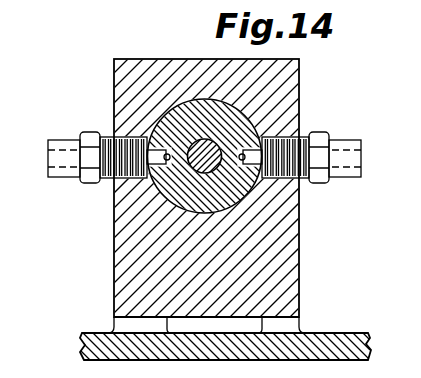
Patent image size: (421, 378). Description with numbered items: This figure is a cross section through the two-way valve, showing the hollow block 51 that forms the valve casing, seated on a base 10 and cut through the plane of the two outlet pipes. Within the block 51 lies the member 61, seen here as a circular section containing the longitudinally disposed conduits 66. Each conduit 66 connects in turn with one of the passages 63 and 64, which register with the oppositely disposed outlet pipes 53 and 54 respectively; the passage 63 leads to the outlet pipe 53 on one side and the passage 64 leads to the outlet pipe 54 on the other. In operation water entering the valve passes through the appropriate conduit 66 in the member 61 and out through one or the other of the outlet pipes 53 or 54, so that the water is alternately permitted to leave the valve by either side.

The base plate 10 is at (233, 209).
The hollow block 51 is at (299, 243).
The outlet pipe 53 is at (72, 147).
The outlet pipe 54 is at (335, 137).
The member 61 is at (183, 192).
The passage 63 is at (158, 150).
The passage 64 is at (257, 181).
The longitudinal conduit 66 is at (168, 154).